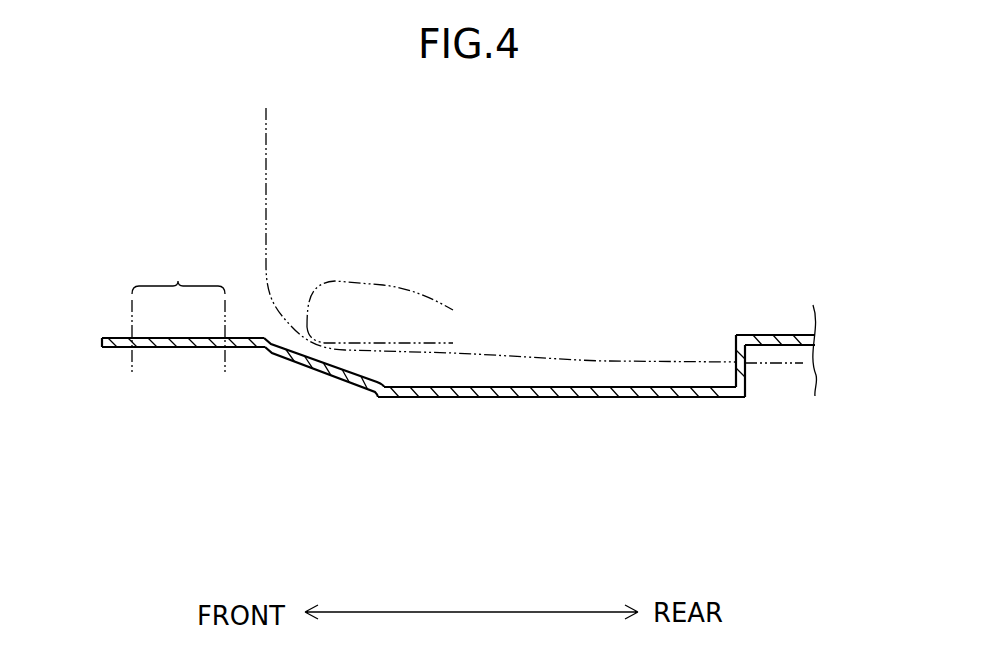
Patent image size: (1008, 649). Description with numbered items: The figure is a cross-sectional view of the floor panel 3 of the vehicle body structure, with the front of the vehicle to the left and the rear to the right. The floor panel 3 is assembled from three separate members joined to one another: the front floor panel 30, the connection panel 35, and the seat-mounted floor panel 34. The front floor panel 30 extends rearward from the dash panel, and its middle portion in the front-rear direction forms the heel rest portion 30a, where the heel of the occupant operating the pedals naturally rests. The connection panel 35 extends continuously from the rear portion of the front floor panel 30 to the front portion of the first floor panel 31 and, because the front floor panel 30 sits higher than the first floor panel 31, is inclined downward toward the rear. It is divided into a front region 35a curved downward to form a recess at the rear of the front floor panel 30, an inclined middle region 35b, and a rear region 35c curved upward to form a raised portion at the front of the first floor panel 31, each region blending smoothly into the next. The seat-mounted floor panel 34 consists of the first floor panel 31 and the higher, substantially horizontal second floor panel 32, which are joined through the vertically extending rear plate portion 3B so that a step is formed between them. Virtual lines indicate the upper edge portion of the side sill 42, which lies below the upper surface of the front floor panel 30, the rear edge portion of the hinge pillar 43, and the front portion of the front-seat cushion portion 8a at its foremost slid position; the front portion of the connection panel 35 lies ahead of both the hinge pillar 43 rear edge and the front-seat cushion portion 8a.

The floor panel 3 is at (459, 409).
The rear plate portion 3B is at (735, 350).
The front-seat cushion portion 8a is at (417, 290).
The front floor panel 30 is at (222, 386).
The heel rest portion 30a is at (178, 311).
The first floor panel 31 is at (607, 399).
The second floor panel 32 is at (777, 346).
The seat-mounted floor panel 34 is at (577, 431).
The connection panel 35 is at (374, 359).
The front region 35a is at (282, 347).
The middle region 35b is at (338, 367).
The rear region 35c is at (381, 389).
The side sill 42 is at (613, 360).
The hinge pillar 43 is at (266, 170).